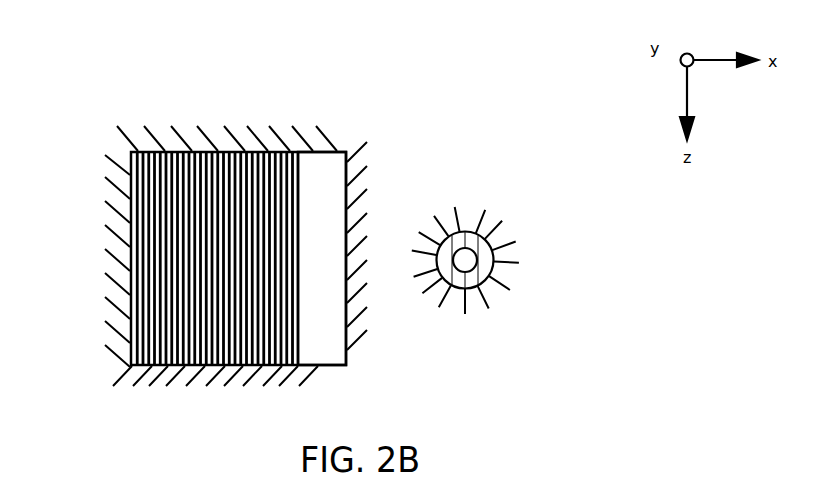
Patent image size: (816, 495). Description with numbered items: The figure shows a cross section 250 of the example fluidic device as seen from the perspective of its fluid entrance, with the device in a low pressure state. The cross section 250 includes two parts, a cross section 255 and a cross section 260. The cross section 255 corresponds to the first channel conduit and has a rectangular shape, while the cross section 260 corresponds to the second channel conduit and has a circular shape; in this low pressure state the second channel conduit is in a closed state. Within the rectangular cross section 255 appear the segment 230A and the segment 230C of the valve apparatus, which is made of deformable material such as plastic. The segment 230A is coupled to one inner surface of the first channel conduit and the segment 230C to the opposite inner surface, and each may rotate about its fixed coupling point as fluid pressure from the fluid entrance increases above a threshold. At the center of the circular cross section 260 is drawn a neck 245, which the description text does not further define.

The cross section 250 is at (118, 50).
The cross section 255 is at (105, 155).
The segment 230A is at (286, 205).
The segment 230C is at (322, 173).
The cross section 260 is at (466, 196).
The neck 245 is at (478, 262).